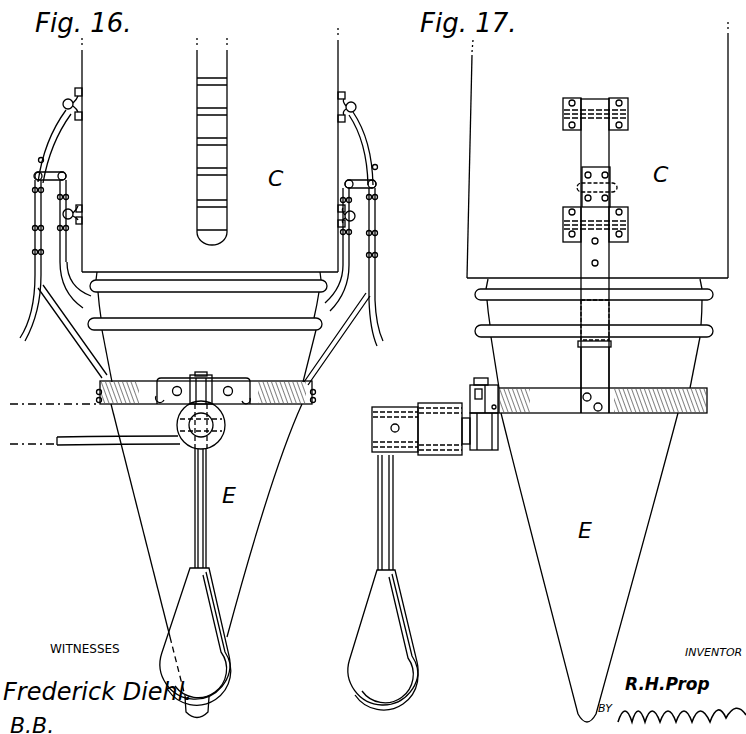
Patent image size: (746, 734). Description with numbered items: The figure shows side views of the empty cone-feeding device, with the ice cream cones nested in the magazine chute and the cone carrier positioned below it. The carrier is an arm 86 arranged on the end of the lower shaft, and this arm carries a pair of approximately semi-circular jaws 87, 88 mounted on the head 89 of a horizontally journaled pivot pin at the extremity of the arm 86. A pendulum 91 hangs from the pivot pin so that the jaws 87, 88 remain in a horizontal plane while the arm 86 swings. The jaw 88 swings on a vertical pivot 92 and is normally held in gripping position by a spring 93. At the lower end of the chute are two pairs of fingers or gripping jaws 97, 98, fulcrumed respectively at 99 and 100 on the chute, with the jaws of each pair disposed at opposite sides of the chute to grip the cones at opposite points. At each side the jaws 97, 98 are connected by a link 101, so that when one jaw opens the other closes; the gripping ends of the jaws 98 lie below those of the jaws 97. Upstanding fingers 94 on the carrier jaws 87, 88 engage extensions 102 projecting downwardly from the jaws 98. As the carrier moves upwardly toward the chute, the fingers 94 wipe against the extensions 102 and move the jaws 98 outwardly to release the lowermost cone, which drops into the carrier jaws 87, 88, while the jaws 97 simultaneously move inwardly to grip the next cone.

In FIG. 16, the arm 86 is at (54, 436).
In FIG. 17, the arm 86 is at (446, 452).
In FIG. 16, the semi-circular jaw 87 is at (133, 391).
In FIG. 16, the movable jaw 88 is at (273, 407).
In FIG. 17, the movable jaw 88 is at (613, 412).
In FIG. 17, the head of pivot pin 89 is at (483, 448).
In FIG. 16, the pendulum 91 is at (198, 652).
In FIG. 17, the pendulum 91 is at (378, 606).
In FIG. 17, the vertical pivot 92 is at (482, 378).
In FIG. 17, the spring 93 is at (471, 389).
In FIG. 16, the upstanding finger 94 is at (79, 357).
In FIG. 17, the upstanding finger 94 is at (610, 358).
In FIG. 16, the gripping jaw 97 is at (68, 253).
In FIG. 16, the gripping jaw 98 is at (87, 306).
In FIG. 17, the gripping jaw 98 is at (605, 278).
In FIG. 16, the fulcrum 99 is at (342, 214).
In FIG. 16, the fulcrum 100 is at (344, 109).
In FIG. 17, the fulcrum 100 is at (565, 115).
In FIG. 16, the link 101 is at (360, 181).
In FIG. 16, the extension 102 is at (36, 325).
In FIG. 17, the extension 102 is at (610, 328).